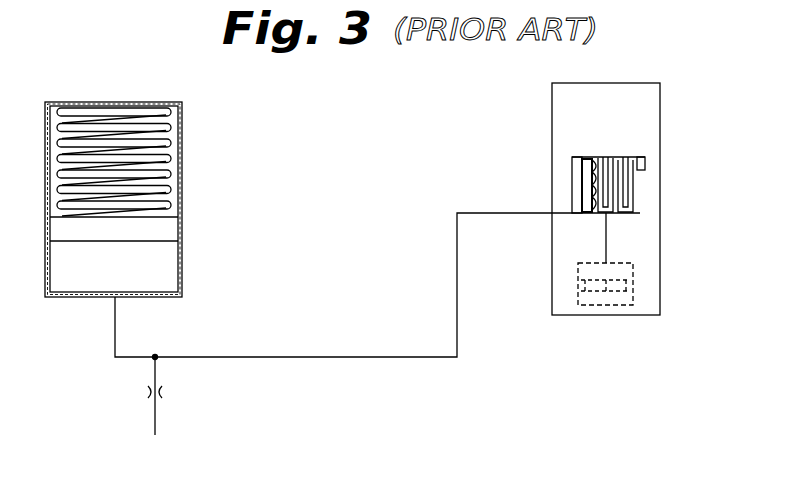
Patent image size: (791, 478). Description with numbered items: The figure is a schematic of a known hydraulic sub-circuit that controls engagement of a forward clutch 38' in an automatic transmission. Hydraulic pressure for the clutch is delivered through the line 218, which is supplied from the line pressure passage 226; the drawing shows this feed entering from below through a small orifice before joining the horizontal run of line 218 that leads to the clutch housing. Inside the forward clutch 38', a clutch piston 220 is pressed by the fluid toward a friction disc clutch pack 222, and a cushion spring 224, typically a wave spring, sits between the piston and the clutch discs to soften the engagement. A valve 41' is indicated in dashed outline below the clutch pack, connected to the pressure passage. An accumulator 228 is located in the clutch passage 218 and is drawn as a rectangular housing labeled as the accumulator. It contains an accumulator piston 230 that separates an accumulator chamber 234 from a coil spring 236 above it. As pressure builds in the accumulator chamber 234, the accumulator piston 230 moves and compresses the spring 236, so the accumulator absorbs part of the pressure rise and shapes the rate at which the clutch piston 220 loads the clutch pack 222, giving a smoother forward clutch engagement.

The line 218 is at (497, 213).
The clutch piston 220 is at (572, 168).
The friction disc clutch pack 222 is at (640, 186).
The cushion spring 224 is at (590, 213).
The line pressure passage 226 is at (155, 417).
The accumulator 228 is at (184, 227).
The accumulator piston 230 is at (89, 230).
The accumulator chamber 234 is at (153, 274).
The accumulator spring 236 is at (68, 108).
The forward clutch 38' is at (649, 199).
The valve 41' is at (584, 292).